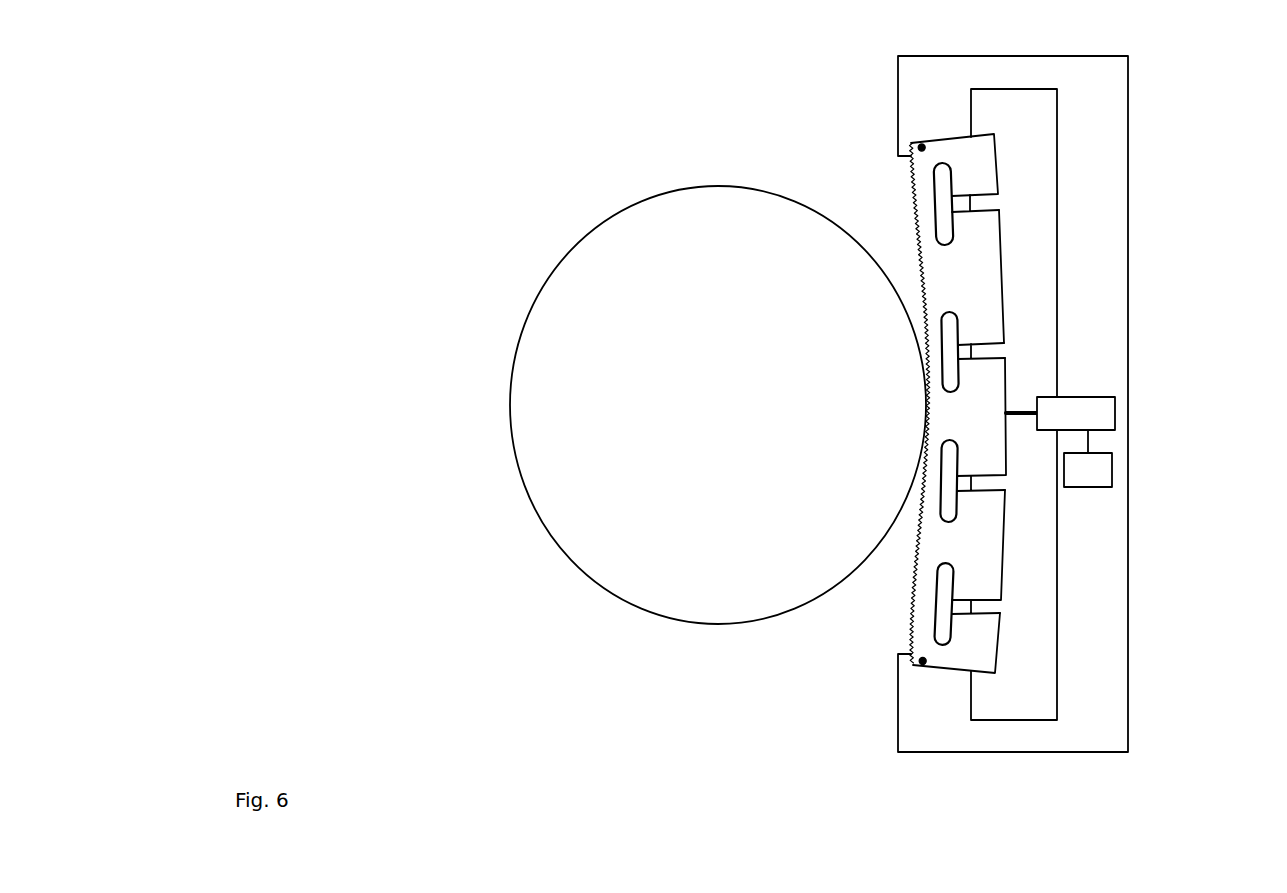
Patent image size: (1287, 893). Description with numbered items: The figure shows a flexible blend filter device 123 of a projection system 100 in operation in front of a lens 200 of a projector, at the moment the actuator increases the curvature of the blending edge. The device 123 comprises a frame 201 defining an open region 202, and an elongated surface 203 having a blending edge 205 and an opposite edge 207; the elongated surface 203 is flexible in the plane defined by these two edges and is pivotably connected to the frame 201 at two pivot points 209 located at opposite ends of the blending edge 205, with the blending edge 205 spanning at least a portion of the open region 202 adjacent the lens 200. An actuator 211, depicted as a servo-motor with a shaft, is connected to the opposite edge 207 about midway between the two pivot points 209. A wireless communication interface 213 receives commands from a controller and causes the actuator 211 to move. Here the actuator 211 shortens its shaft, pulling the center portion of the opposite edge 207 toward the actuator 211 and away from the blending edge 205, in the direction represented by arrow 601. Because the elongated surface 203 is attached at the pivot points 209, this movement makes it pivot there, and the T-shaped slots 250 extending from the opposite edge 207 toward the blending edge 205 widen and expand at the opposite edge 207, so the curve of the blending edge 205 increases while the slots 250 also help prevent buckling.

The system 100 is at (394, 727).
The device 123 is at (1156, 704).
The lens 200 is at (539, 504).
The frame 201 is at (1074, 143).
The open region 202 is at (883, 184).
The elongated surface 203 is at (940, 281).
The blending edge 205 is at (915, 610).
The opposite edge 207 is at (1005, 318).
The pivot points 209 is at (923, 146).
The actuator 211 is at (1062, 425).
The wireless communication interface 213 is at (1071, 481).
The slots 250 is at (1009, 607).
The arrow 601 is at (1028, 443).